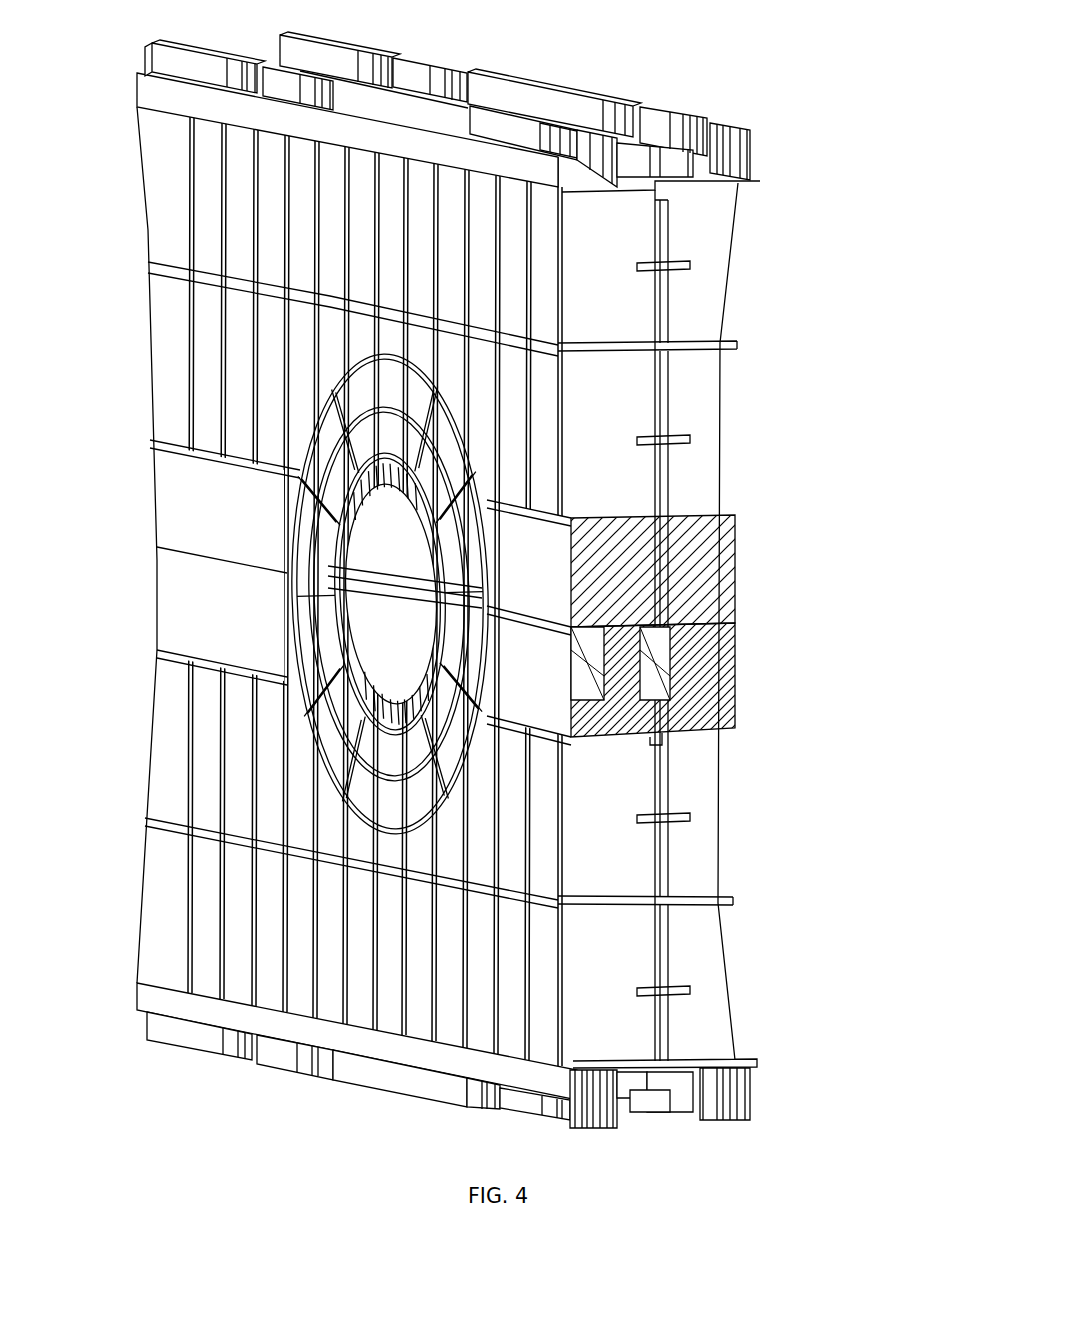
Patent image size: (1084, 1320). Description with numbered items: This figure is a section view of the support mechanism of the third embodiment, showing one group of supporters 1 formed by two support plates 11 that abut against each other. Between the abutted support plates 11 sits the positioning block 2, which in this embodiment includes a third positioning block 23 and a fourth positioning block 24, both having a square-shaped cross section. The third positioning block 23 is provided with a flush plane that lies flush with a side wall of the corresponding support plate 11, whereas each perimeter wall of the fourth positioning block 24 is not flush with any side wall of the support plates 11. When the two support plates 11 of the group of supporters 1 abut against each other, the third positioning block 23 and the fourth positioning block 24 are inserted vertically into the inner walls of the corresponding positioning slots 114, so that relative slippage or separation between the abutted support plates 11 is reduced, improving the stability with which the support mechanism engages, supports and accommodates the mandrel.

The supporter 1 is at (721, 647).
The support plate 11 is at (721, 647).
The positioning block 2 is at (721, 689).
The third positioning block 23 is at (592, 676).
The fourth positioning block 24 is at (660, 668).
The positioning slot 114 is at (650, 735).